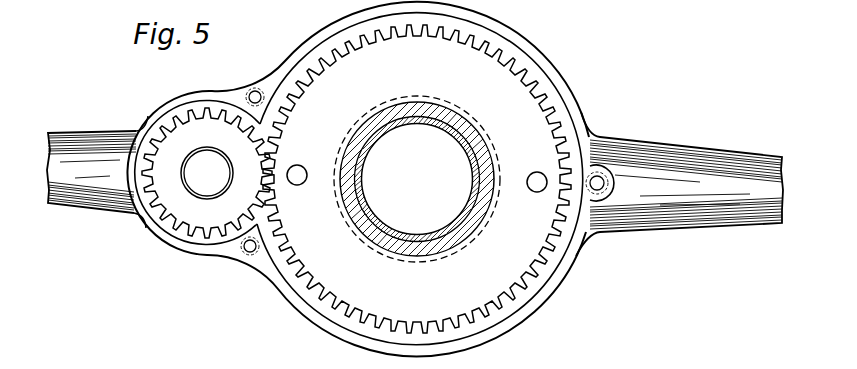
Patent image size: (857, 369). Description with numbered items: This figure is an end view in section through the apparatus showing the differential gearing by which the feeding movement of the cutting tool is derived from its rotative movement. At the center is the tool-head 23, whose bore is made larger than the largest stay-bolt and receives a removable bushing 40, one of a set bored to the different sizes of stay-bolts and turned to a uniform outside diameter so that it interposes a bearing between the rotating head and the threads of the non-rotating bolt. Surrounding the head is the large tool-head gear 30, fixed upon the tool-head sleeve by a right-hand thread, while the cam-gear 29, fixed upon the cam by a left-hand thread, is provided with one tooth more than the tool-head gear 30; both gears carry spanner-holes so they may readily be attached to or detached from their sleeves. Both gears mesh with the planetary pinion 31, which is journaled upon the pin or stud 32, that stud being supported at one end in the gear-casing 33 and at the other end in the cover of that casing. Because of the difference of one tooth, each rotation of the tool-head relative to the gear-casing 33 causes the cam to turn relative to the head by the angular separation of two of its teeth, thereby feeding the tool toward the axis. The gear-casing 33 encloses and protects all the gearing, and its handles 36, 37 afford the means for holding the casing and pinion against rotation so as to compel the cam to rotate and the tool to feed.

The tool-head 23 is at (480, 215).
The cam-gear 29 is at (565, 163).
The tool-head gear 30 is at (417, 179).
The planetary pinion 31 is at (207, 173).
The pin or stud 32 is at (207, 173).
The gear-casing 33 is at (227, 253).
The handle 36 is at (675, 230).
The handle 37 is at (91, 208).
The removable bushing 40 is at (425, 123).